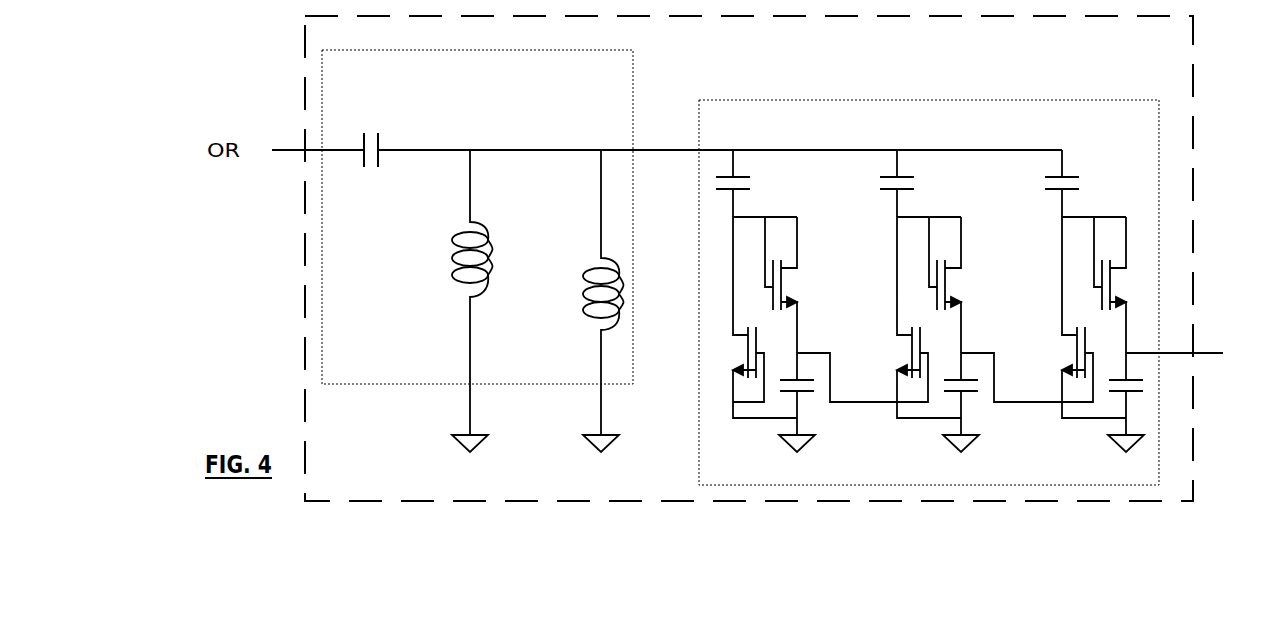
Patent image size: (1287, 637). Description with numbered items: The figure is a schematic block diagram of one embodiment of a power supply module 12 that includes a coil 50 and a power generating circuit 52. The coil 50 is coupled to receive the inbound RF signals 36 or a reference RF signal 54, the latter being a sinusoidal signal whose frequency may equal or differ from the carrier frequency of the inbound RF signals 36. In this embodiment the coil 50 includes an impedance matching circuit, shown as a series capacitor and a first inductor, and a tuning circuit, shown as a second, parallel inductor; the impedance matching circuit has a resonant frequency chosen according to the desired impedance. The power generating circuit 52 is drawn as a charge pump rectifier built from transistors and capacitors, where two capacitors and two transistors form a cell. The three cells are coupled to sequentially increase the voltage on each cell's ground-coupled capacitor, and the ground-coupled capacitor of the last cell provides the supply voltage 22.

The power supply module 12 is at (1182, 50).
The inbound RF signals 36 is at (263, 106).
The reference RF signal 54 is at (263, 238).
The coil 50 is at (477, 251).
The power generating circuit 52 is at (1058, 131).
The supply voltage 22 is at (1232, 440).